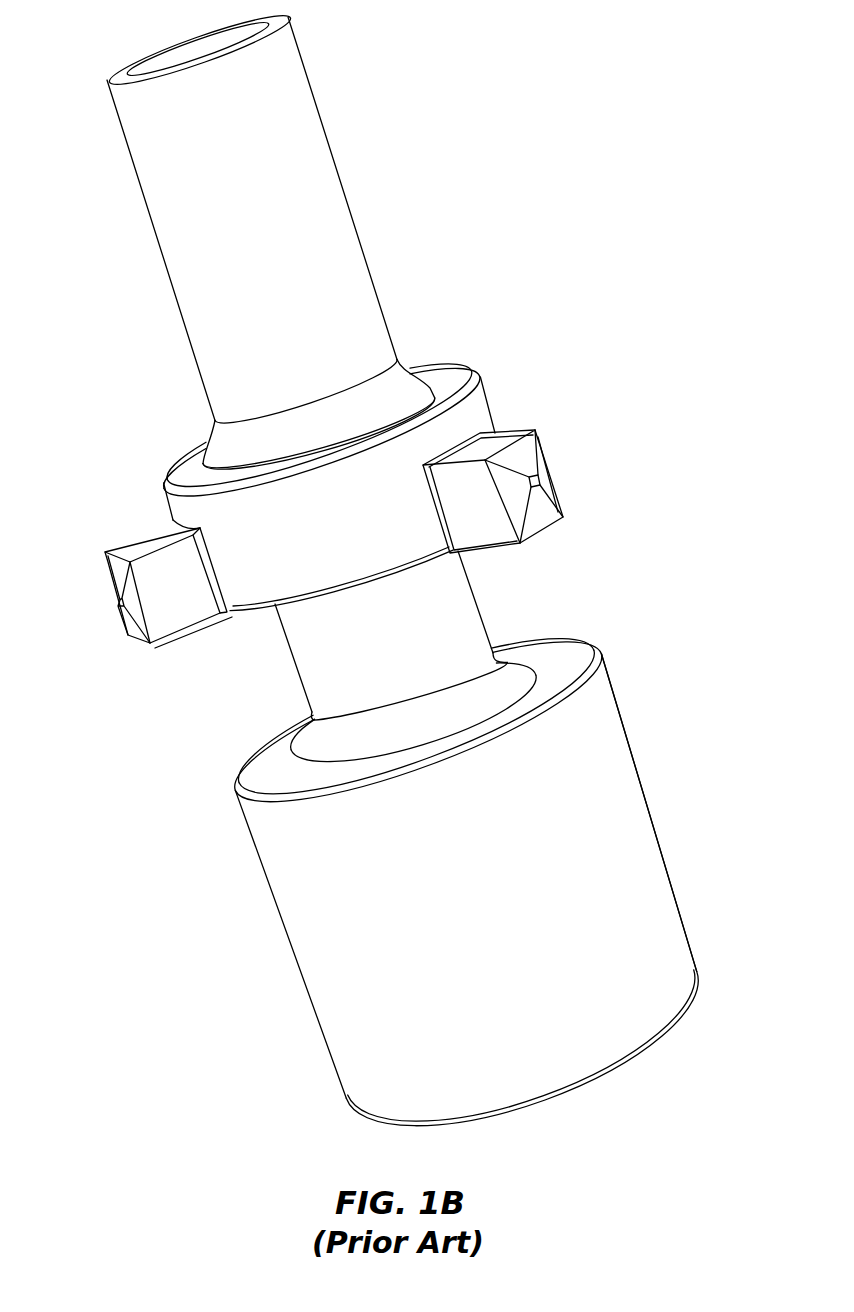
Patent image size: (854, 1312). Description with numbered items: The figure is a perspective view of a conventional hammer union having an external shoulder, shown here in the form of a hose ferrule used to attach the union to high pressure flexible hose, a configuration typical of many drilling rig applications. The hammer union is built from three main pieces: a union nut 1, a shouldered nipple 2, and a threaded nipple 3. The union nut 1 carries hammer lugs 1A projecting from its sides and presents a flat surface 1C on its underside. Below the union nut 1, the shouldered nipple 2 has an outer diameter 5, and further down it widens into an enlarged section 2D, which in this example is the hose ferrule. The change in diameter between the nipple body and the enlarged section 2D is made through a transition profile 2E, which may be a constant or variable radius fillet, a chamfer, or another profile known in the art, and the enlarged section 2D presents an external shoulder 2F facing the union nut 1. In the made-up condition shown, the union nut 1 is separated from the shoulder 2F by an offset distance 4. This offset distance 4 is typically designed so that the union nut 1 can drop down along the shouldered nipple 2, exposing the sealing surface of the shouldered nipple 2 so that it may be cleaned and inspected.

The union nut 1 is at (486, 412).
The hammer lugs 1A is at (545, 478).
The flat surface 1C is at (426, 573).
The shouldered nipple 2 is at (298, 965).
The enlarged section 2D is at (630, 767).
The transition profile 2E is at (512, 675).
The external shoulder 2F is at (555, 667).
The threaded nipple 3 is at (348, 200).
The offset distance 4 is at (235, 620).
The outer diameter 5 is at (472, 607).